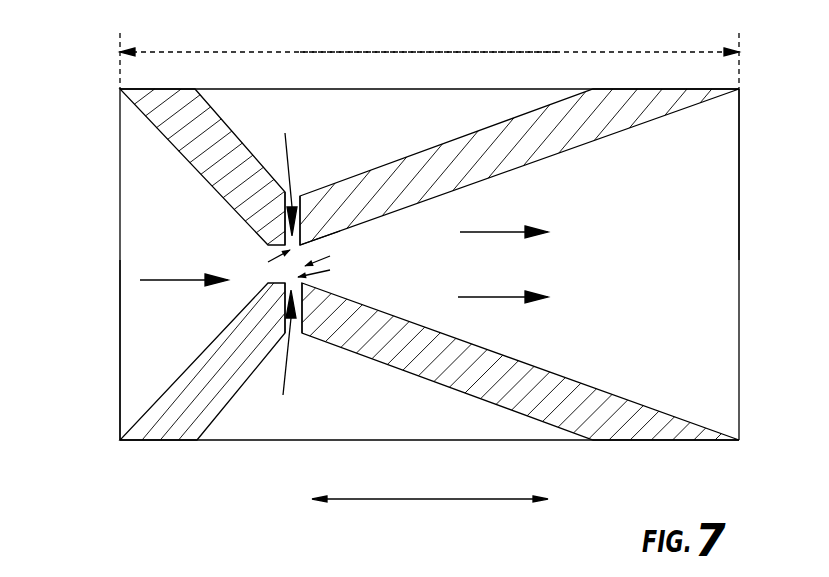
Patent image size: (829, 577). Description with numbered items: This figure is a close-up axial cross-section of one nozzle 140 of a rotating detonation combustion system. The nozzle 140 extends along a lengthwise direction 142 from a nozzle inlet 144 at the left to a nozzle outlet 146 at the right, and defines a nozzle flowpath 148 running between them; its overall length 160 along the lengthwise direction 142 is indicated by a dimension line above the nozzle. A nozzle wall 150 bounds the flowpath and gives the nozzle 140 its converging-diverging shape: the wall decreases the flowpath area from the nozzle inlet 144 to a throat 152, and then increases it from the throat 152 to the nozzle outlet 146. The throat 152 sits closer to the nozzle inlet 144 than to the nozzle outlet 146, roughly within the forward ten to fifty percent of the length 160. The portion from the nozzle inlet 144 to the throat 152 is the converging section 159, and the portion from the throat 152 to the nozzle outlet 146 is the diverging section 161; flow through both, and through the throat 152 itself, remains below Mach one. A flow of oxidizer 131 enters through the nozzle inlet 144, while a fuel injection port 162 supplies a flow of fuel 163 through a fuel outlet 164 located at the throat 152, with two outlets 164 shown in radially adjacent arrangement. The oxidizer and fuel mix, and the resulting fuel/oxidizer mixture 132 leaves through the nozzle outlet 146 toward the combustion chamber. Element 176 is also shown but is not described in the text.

The flow of oxidizer 131 is at (163, 283).
The fuel/oxidizer mixture 132 is at (500, 218).
The nozzle 140 is at (496, 52).
The lengthwise direction 142 is at (445, 499).
The nozzle inlet 144 is at (113, 153).
The nozzle outlet 146 is at (742, 330).
The nozzle flowpath 148 is at (648, 270).
The nozzle wall 150 is at (452, 138).
The throat 152 is at (322, 258).
The converging section 159 is at (143, 353).
The length 160 is at (638, 52).
The diverging section 161 is at (717, 172).
The fuel injection port 162 is at (302, 210).
The flow of fuel 163 is at (285, 163).
The fuel outlet 164 is at (268, 262).
The side wall 176 is at (350, 123).